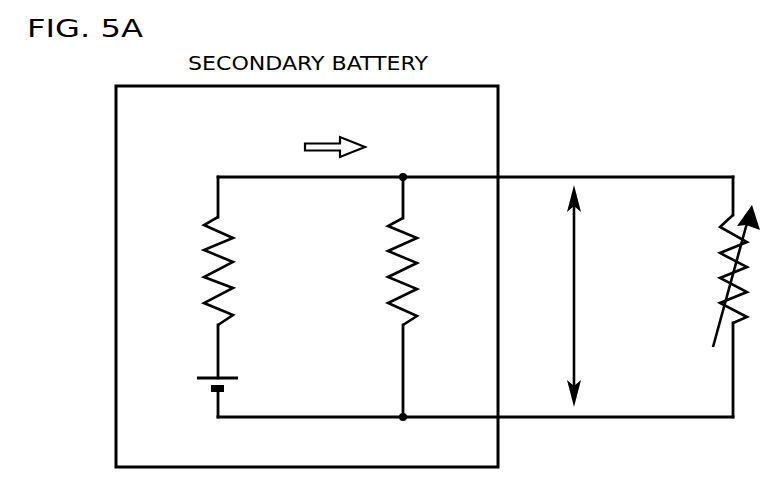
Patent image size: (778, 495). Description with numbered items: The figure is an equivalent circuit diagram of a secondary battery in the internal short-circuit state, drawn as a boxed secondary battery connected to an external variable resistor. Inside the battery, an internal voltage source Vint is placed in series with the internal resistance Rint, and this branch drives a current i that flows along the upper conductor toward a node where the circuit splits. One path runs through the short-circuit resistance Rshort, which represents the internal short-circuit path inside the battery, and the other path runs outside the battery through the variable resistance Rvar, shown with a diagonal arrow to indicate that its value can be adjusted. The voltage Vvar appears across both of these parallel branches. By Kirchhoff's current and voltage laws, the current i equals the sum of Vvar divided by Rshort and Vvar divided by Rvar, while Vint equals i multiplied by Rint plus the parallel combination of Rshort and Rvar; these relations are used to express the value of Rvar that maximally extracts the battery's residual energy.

The current i is at (321, 144).
The internal resistance value Rint is at (185, 271).
The internal voltage Vint is at (188, 372).
The short-circuit resistance value Rshort is at (357, 271).
The voltage across the variable resistor Vvar is at (555, 296).
The variable resistance value Rvar is at (706, 276).